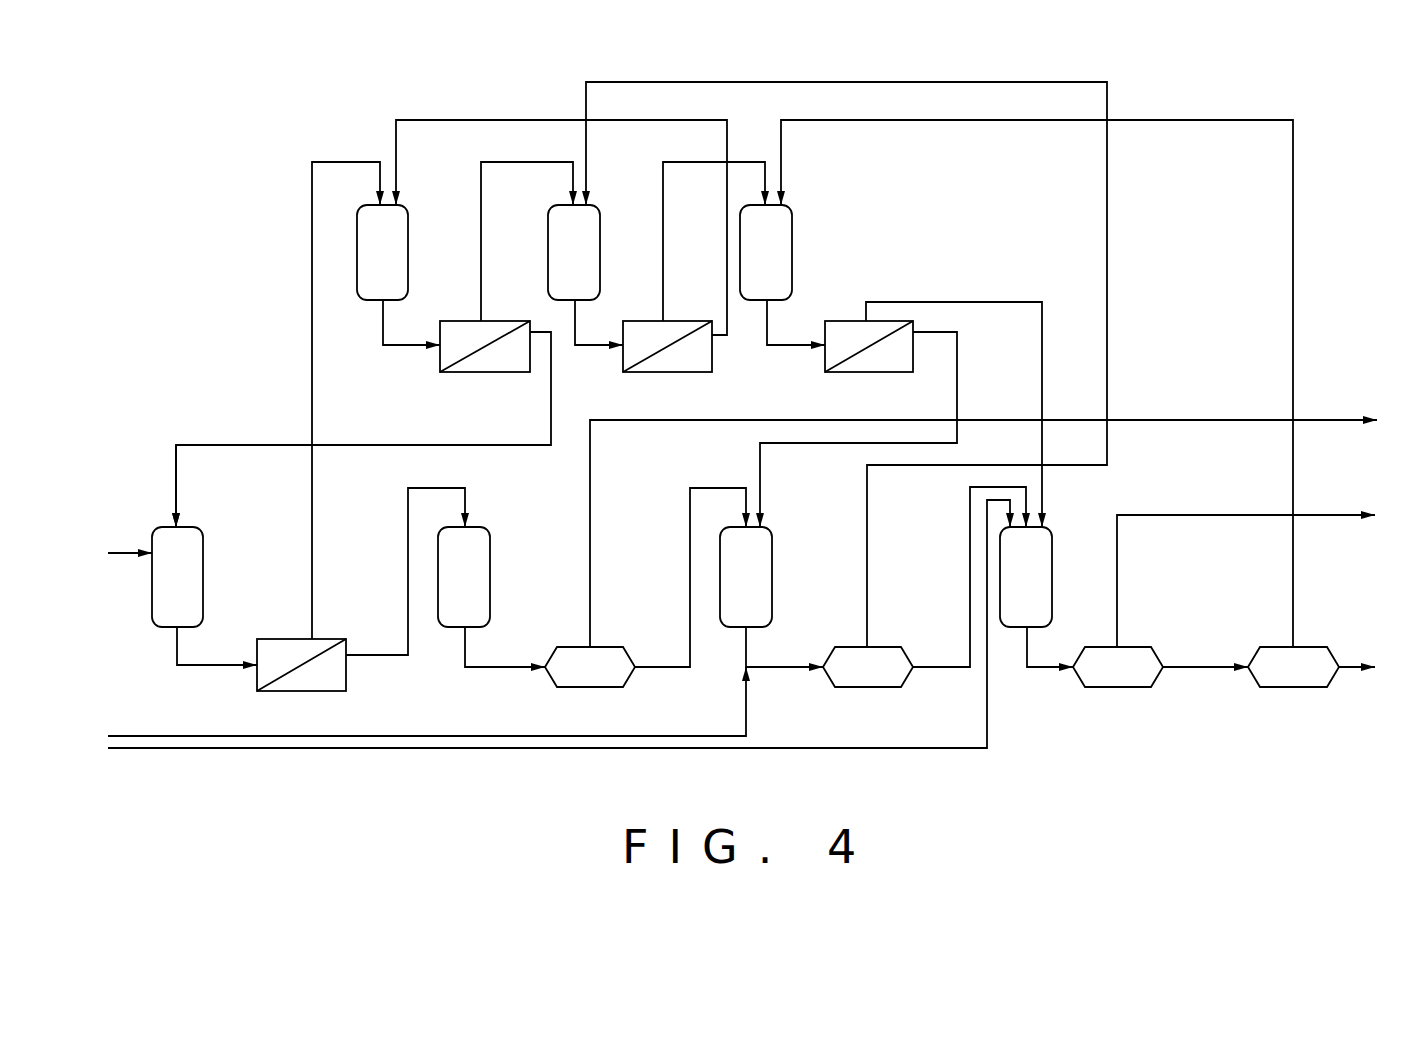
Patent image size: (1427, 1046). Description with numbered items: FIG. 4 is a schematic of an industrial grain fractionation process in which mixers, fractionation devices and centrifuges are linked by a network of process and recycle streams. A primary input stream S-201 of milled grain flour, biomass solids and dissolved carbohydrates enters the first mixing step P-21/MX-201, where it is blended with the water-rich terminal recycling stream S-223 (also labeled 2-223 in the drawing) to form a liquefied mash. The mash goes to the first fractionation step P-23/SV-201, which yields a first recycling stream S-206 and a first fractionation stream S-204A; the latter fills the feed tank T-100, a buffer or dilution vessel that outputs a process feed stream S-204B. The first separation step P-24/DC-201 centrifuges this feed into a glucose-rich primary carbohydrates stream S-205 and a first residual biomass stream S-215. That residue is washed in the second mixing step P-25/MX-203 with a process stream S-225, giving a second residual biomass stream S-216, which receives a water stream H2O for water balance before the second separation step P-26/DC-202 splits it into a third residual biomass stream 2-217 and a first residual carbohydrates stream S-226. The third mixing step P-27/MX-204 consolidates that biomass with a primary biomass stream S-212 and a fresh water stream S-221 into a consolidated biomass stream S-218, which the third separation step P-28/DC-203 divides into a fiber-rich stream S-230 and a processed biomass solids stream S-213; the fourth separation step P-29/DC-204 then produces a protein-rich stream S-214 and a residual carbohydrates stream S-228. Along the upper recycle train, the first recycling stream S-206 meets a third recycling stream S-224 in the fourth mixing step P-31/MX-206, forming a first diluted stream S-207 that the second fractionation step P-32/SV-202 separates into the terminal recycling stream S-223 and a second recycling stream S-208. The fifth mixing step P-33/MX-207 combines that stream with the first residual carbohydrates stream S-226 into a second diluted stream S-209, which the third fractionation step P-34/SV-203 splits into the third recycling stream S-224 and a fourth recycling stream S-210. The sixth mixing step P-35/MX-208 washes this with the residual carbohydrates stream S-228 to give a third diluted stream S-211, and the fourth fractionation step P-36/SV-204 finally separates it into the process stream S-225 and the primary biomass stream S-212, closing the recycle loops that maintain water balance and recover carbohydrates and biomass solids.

The first mixing step P-21 is at (177, 577).
The first mixer MX-201 is at (177, 577).
The feed tank T-100 is at (464, 577).
The first fractionation step P-23 is at (301, 665).
The first fractionation device SV-201 is at (301, 665).
The first separation step P-24 is at (590, 667).
The first separation device DC-201 is at (590, 667).
The second mixing step P-25 is at (746, 577).
The second mixer MX-203 is at (746, 577).
The second separation step P-26 is at (868, 667).
The second separation device DC-202 is at (868, 667).
The third mixing step P-27 is at (1026, 577).
The third mixer MX-204 is at (1026, 577).
The third separation step P-28 is at (1118, 667).
The third separation device DC-203 is at (1118, 667).
The fourth separation step P-29 is at (1293, 667).
The fourth separation device DC-204 is at (1293, 667).
The fourth mixing step P-31 is at (383, 252).
The fourth mixer MX-206 is at (383, 252).
The second fractionation step P-32 is at (485, 346).
The second fractionation device SV-202 is at (485, 346).
The fifth mixing step P-33 is at (574, 252).
The fifth mixer MX-207 is at (574, 252).
The third fractionation step P-34 is at (667, 346).
The third fractionation device SV-203 is at (667, 346).
The sixth mixing step P-35 is at (766, 252).
The sixth mixer MX-208 is at (766, 252).
The fourth fractionation step P-36 is at (869, 346).
The fourth fractionation device SV-204 is at (869, 346).
The primary input stream S-201 is at (110, 541).
The terminal recycling stream S-223 is at (363, 429).
The recycle stream 2-223 (S-223) 2-223 is at (215, 474).
The first recycling stream S-206 is at (345, 389).
The first fractionation stream S-204A is at (393, 571).
The process feed stream S-204B is at (505, 647).
The primary carbohydrates stream S-205 is at (984, 533).
The first residual biomass stream S-215 is at (690, 591).
The process stream S-225 is at (858, 429).
The second residual biomass stream S-216 is at (784, 661).
The water stream H2O is at (424, 701).
The first residual carbohydrates stream S-226 is at (846, 352).
The stream 2-217 is at (969, 591).
The fresh water stream S-221 is at (555, 639).
The primary biomass stream S-212 is at (954, 403).
The consolidated biomass stream S-218 is at (1039, 661).
The fiber-rich stream S-230 is at (1249, 581).
The processed biomass solids stream S-213 is at (1205, 654).
The protein-rich stream S-214 is at (1368, 654).
The residual carbohydrates stream S-228 is at (1037, 383).
The third recycling stream S-224 is at (561, 216).
The first diluted stream S-207 is at (402, 337).
The second recycling stream S-208 is at (527, 230).
The second diluted stream S-209 is at (591, 337).
The fourth recycling stream S-210 is at (705, 230).
The third diluted stream S-211 is at (795, 337).